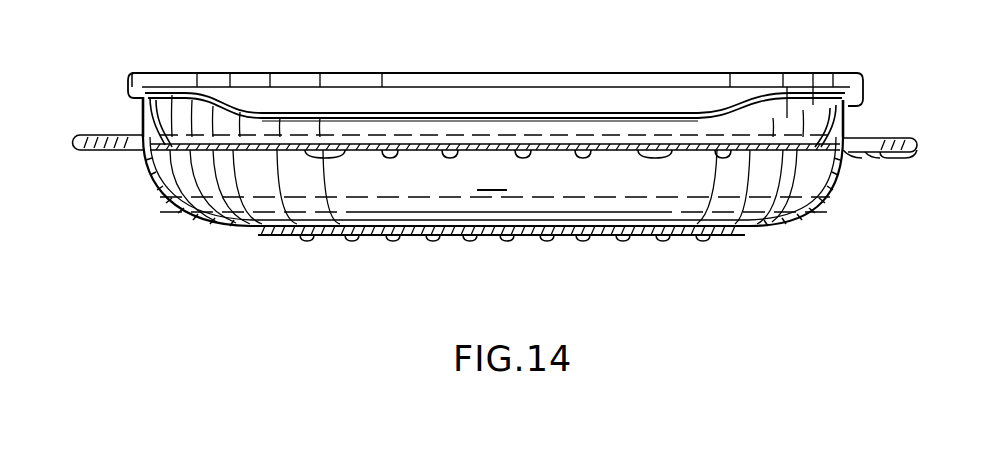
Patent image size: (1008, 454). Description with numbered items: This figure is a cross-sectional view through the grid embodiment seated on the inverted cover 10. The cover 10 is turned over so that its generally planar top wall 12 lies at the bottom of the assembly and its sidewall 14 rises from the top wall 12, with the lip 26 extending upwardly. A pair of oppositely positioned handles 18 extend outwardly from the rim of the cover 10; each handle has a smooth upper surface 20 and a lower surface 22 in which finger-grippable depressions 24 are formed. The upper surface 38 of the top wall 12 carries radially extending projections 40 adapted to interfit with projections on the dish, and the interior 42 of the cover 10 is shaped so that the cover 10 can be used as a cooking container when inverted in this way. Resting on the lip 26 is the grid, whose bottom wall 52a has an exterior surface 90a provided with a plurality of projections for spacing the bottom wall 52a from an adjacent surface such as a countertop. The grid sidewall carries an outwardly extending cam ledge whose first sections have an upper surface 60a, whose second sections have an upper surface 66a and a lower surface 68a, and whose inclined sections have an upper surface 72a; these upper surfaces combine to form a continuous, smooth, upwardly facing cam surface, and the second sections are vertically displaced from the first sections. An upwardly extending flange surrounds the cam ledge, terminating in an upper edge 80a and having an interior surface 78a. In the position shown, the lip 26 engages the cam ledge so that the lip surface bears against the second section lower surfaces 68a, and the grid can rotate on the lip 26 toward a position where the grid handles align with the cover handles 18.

The cover 10 is at (151, 185).
The top wall 12 is at (257, 234).
The sidewall 14 is at (828, 192).
The handles 18 is at (907, 152).
The upper surface 20 is at (860, 162).
The lower surface 22 is at (138, 137).
The finger-grippable depressions 24 is at (887, 136).
The lip 26 is at (131, 113).
The upper surface 38 is at (493, 238).
The radially extending projections 40 is at (508, 238).
The interior 42 is at (492, 179).
The bottom wall 52a is at (728, 150).
The upper surface 60a is at (462, 111).
The upper surface 66a is at (142, 73).
The lower surface 68a is at (858, 99).
The upper surface 72a is at (238, 101).
The interior surface 78a is at (540, 93).
The upper edge 80a is at (138, 72).
The exterior surface 90a is at (213, 226).